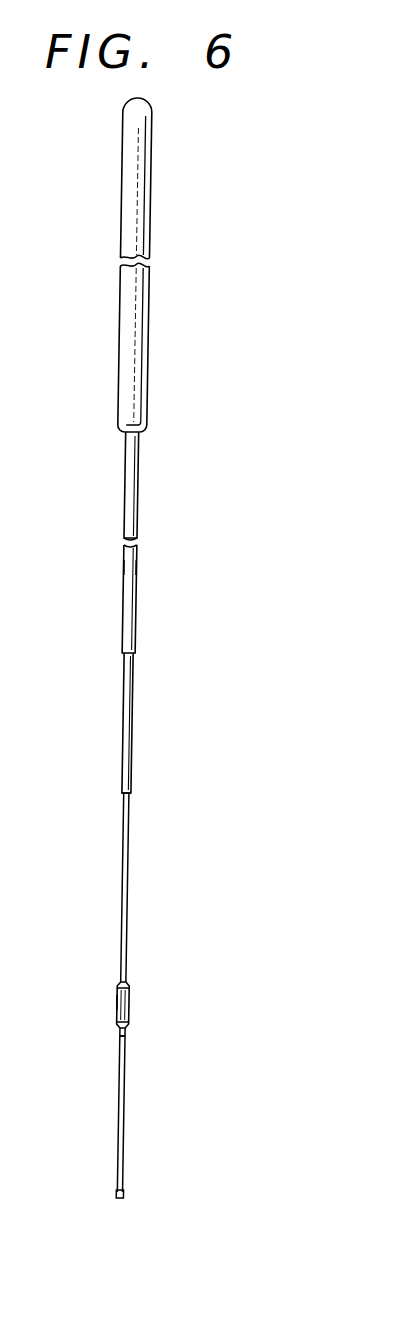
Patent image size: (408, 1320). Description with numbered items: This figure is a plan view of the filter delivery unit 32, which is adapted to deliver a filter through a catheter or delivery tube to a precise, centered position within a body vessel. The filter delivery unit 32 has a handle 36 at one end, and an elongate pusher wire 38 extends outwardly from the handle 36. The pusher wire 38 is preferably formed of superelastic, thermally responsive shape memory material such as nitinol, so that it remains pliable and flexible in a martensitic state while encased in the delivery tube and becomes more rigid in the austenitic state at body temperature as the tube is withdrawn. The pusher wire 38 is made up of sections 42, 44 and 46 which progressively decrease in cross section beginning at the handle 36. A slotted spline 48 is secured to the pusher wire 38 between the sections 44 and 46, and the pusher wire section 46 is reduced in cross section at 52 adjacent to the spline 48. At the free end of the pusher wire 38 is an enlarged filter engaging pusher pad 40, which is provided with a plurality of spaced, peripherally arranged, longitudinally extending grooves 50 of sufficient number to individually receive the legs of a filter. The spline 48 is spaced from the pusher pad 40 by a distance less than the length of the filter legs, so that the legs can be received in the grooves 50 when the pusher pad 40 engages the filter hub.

The filter delivery unit 32 is at (165, 555).
The handle 36 is at (152, 183).
The elongate pusher wire 38 is at (131, 731).
The filter engaging pusher pad 40 is at (115, 1196).
The pusher wire section 42 is at (138, 470).
The pusher wire section 44 is at (131, 783).
The pusher wire section 46 is at (124, 1110).
The slotted spline 48 is at (115, 1002).
The grooves 50 is at (128, 990).
The reduced cross section 52 is at (124, 1030).